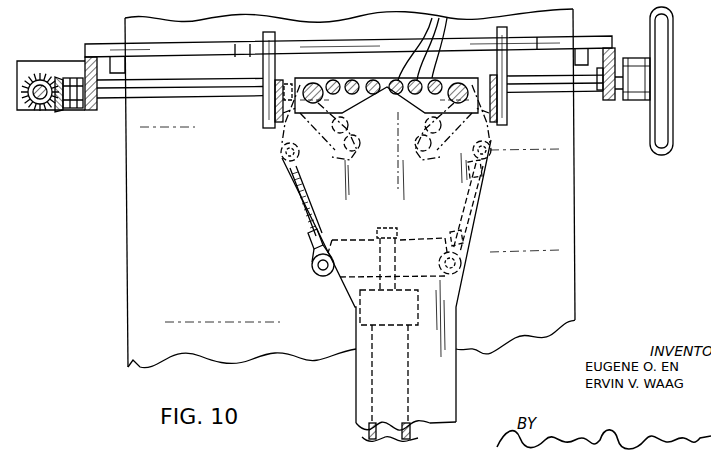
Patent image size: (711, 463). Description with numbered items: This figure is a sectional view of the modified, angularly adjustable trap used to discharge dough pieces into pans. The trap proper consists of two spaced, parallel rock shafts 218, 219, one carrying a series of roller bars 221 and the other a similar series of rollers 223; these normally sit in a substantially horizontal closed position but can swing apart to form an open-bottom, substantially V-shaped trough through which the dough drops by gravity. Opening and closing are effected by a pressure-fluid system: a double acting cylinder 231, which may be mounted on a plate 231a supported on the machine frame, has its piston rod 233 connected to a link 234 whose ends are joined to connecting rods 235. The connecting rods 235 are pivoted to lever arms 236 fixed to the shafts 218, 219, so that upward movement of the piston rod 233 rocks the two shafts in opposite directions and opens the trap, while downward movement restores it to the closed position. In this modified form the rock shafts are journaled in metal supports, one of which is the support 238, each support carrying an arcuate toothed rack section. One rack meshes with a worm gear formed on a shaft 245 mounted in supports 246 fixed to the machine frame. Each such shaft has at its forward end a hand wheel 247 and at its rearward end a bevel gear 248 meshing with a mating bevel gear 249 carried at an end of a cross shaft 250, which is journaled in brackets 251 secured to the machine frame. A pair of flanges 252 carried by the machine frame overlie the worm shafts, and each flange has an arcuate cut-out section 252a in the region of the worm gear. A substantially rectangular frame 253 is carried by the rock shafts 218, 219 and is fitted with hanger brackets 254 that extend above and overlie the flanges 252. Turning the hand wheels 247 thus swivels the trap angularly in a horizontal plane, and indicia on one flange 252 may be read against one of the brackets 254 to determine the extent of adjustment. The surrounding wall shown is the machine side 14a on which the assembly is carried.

The wall plate 14a is at (563, 165).
The rock shaft 218 is at (462, 86).
The rock shaft 219 is at (318, 85).
The roller bars 221 is at (432, 40).
The rollers 223 is at (365, 87).
The double acting cylinder 231 is at (410, 396).
The plate 231a is at (458, 326).
The piston rod 233 is at (384, 232).
The link 234 is at (427, 245).
The connecting rods 235 is at (302, 218).
The lever arms 236 is at (312, 154).
The metal support 238 is at (286, 84).
The shaft 245 is at (533, 91).
The supports 246 is at (85, 70).
The hand wheel 247 is at (666, 70).
The bevel gear 248 is at (70, 110).
The bevel gear 249 is at (57, 112).
The shaft 250 is at (38, 110).
The brackets 251 is at (37, 61).
The flanges 252 is at (200, 44).
The arcuate cut-out section 252a is at (255, 44).
The rectangular frame 253 is at (290, 80).
The hanger brackets 254 is at (263, 65).